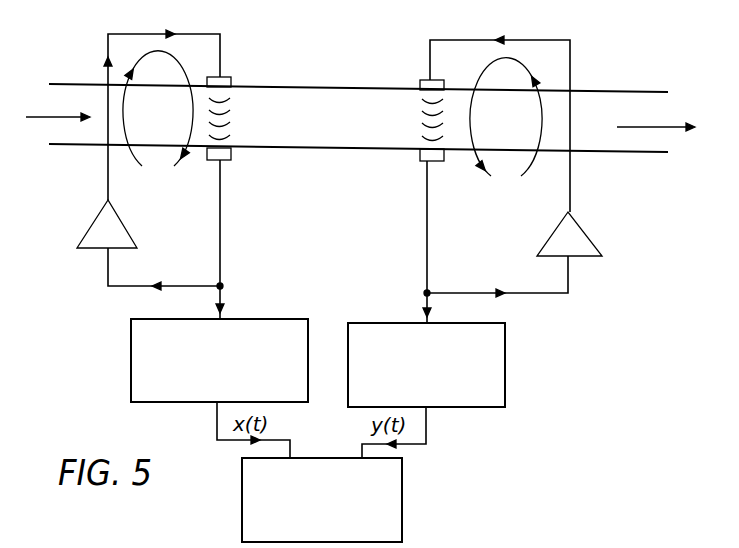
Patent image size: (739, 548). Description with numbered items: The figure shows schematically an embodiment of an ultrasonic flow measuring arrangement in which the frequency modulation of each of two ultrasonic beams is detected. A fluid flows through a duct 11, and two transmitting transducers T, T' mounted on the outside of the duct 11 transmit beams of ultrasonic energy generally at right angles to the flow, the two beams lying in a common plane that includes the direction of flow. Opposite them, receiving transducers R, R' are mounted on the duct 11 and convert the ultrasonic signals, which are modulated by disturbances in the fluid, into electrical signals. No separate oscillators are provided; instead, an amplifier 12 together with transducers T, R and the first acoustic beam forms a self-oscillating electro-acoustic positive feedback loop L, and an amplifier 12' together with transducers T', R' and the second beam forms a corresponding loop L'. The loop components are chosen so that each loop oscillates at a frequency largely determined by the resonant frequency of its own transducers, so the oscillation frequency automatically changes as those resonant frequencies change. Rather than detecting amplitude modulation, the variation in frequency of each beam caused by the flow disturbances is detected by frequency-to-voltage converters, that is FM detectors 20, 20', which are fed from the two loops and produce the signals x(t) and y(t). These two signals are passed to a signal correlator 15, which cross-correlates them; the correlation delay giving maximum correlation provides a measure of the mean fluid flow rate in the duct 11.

The duct 11 is at (618, 97).
The amplifier 12 is at (122, 224).
The amplifier 12' is at (584, 229).
The signal correlator 15 is at (402, 503).
The frequency-to-voltage converter 20 is at (196, 360).
The frequency-to-voltage converter 20' is at (455, 365).
The transmitting transducer T is at (235, 89).
The receiving transducer R is at (232, 168).
The transmitting transducer T' is at (418, 90).
The receiving transducer R' is at (414, 168).
The positive feedback loop L is at (158, 108).
The positive feedback loop L' is at (506, 117).